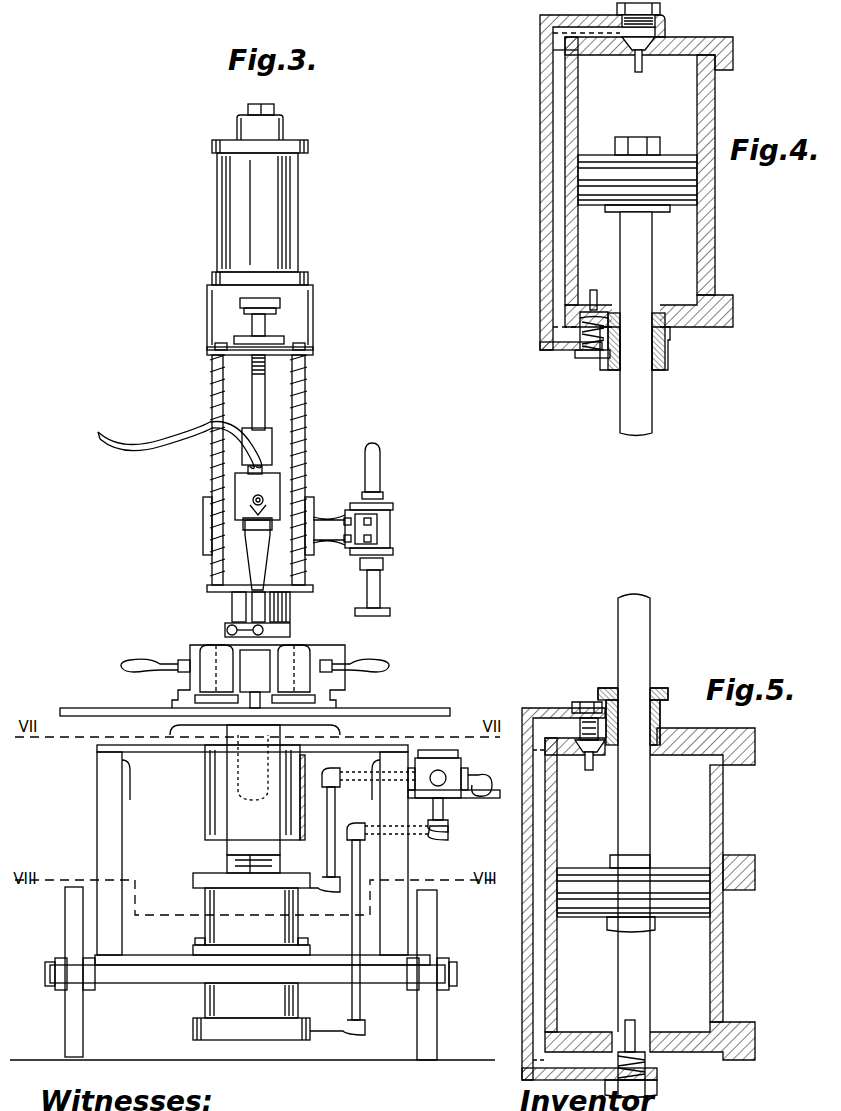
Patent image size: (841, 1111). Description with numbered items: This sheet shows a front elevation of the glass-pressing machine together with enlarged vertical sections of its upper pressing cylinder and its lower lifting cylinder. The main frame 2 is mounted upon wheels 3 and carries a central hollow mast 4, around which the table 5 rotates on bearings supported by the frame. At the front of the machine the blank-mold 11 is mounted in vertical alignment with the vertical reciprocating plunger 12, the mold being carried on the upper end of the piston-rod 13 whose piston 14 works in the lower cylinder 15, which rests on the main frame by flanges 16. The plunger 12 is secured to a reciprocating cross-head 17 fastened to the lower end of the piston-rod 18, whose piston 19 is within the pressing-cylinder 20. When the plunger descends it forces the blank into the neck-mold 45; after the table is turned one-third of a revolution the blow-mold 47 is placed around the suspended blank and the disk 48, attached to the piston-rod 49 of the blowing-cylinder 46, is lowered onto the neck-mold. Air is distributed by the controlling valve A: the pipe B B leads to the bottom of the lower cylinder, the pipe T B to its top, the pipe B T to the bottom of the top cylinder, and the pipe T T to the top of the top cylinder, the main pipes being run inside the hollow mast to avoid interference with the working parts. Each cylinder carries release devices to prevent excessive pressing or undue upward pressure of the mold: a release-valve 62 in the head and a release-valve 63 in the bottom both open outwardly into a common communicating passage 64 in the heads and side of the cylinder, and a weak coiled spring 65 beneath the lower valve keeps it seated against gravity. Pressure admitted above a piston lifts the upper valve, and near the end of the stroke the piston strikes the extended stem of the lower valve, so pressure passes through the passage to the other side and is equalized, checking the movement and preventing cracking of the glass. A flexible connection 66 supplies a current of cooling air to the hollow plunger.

In FIG. 3, the main frame 2 is at (252, 850).
In FIG. 3, the wheels 3 is at (65, 935).
In FIG. 3, the mast 4 is at (232, 609).
In FIG. 3, the table 5 is at (72, 712).
In FIG. 3, the blank-mold 11 is at (255, 790).
In FIG. 3, the plunger 12 is at (240, 556).
In FIG. 3, the piston-rod 13 is at (227, 856).
In FIG. 5, the piston-rod 13 is at (633, 813).
In FIG. 5, the piston 14 is at (633, 893).
In FIG. 3, the cylinder 15 is at (251, 956).
In FIG. 5, the cylinder 15 is at (725, 816).
In FIG. 3, the flanges 16 is at (195, 950).
In FIG. 5, the flanges 16 is at (757, 880).
In FIG. 3, the cross-head 17 is at (278, 468).
In FIG. 3, the piston-rod 18 is at (260, 380).
In FIG. 4, the piston-rod 18 is at (636, 324).
In FIG. 4, the piston 19 is at (637, 174).
In FIG. 3, the pressing-cylinder 20 is at (232, 213).
In FIG. 4, the pressing-cylinder 20 is at (712, 222).
In FIG. 3, the neck-mold 45 is at (290, 628).
In FIG. 3, the blowing-cylinder 46 is at (380, 527).
In FIG. 3, the blow-mold 47 is at (195, 686).
In FIG. 3, the disk 48 is at (390, 612).
In FIG. 3, the piston-rod 49 is at (374, 585).
In FIG. 4, the release-valve 62 is at (662, 42).
In FIG. 5, the release-valve 62 is at (578, 728).
In FIG. 4, the release-valve 63 is at (585, 320).
In FIG. 5, the release-valve 63 is at (632, 1055).
In FIG. 3, the communicating passage 64 is at (258, 197).
In FIG. 4, the communicating passage 64 is at (560, 205).
In FIG. 5, the communicating passage 64 is at (548, 950).
In FIG. 4, the coiled spring 65 is at (594, 352).
In FIG. 5, the coiled spring 65 is at (660, 1068).
In FIG. 3, the connections 66 is at (146, 438).
In FIG. 3, the valve A is at (450, 774).
In FIG. 3, the pipe TT is at (362, 825).
In FIG. 3, the pipe TB is at (370, 920).
In FIG. 3, the pipe BT is at (448, 822).
In FIG. 3, the pipe BB is at (420, 835).